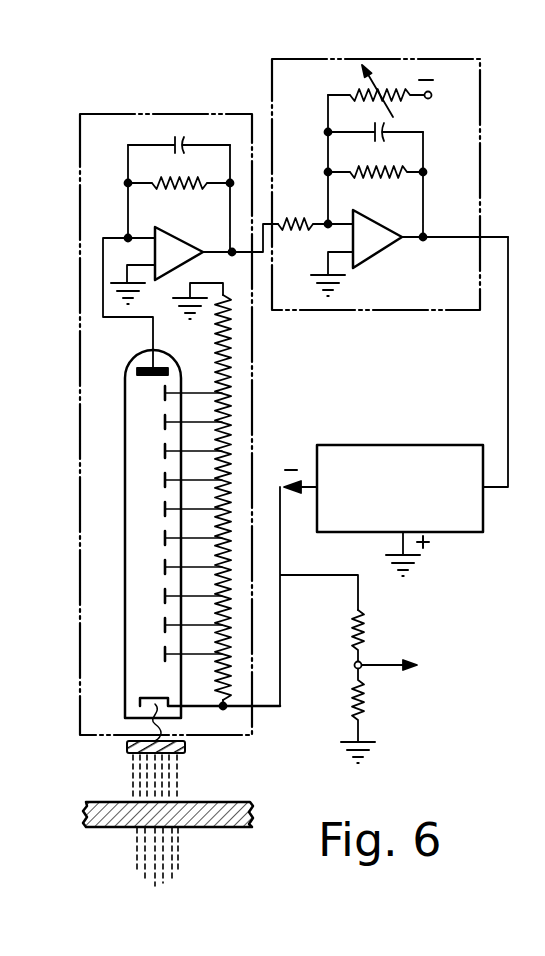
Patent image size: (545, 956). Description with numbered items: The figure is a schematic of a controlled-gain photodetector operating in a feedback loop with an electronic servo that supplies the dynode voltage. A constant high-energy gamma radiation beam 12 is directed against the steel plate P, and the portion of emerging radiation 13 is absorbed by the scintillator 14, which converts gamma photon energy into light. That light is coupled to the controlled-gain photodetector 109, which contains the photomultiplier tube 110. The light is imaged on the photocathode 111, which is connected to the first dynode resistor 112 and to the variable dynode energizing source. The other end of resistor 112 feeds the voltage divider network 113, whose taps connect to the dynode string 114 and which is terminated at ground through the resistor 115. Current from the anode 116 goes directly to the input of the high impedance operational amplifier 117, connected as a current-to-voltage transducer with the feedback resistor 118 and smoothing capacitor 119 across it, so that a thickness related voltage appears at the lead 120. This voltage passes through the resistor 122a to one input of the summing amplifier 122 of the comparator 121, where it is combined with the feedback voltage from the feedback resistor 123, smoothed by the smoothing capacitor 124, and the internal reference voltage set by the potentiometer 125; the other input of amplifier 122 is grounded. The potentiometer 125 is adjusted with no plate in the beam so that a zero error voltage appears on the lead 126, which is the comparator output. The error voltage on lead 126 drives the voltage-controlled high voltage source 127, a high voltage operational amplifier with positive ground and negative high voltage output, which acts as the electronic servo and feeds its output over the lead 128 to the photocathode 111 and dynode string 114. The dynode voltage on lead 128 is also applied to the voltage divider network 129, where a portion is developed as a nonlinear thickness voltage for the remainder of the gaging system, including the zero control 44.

The controlled-gain photodetector 109 is at (80, 128).
The photomultiplier tube 110 is at (125, 522).
The photocathode 111 is at (162, 697).
The first dynode resistor 112 is at (221, 703).
The voltage divider network 113 is at (228, 442).
The dynode string 114 is at (165, 506).
The resistor 115 is at (215, 351).
The anode 116 is at (142, 365).
The high impedance operational amplifier 117 is at (163, 227).
The feedback resistor 118 is at (172, 180).
The smoothing capacitor 119 is at (175, 142).
The lead 120 is at (246, 255).
The comparator 121 is at (478, 60).
The summing amplifier 122 is at (378, 253).
The resistor 122a is at (300, 231).
The feedback resistor 123 is at (355, 178).
The smoothing capacitor 124 is at (372, 138).
The potentiometer 125 is at (352, 88).
The lead 126 is at (508, 351).
The voltage-controlled high voltage source 127 is at (395, 445).
The lead 128 is at (281, 561).
The voltage divider network 129 is at (329, 638).
The zero control 44 is at (490, 710).
The gamma radiation beam 12 is at (135, 850).
The emerging radiation 13 is at (178, 780).
The scintillator 14 is at (127, 748).
The steel plate P is at (102, 802).